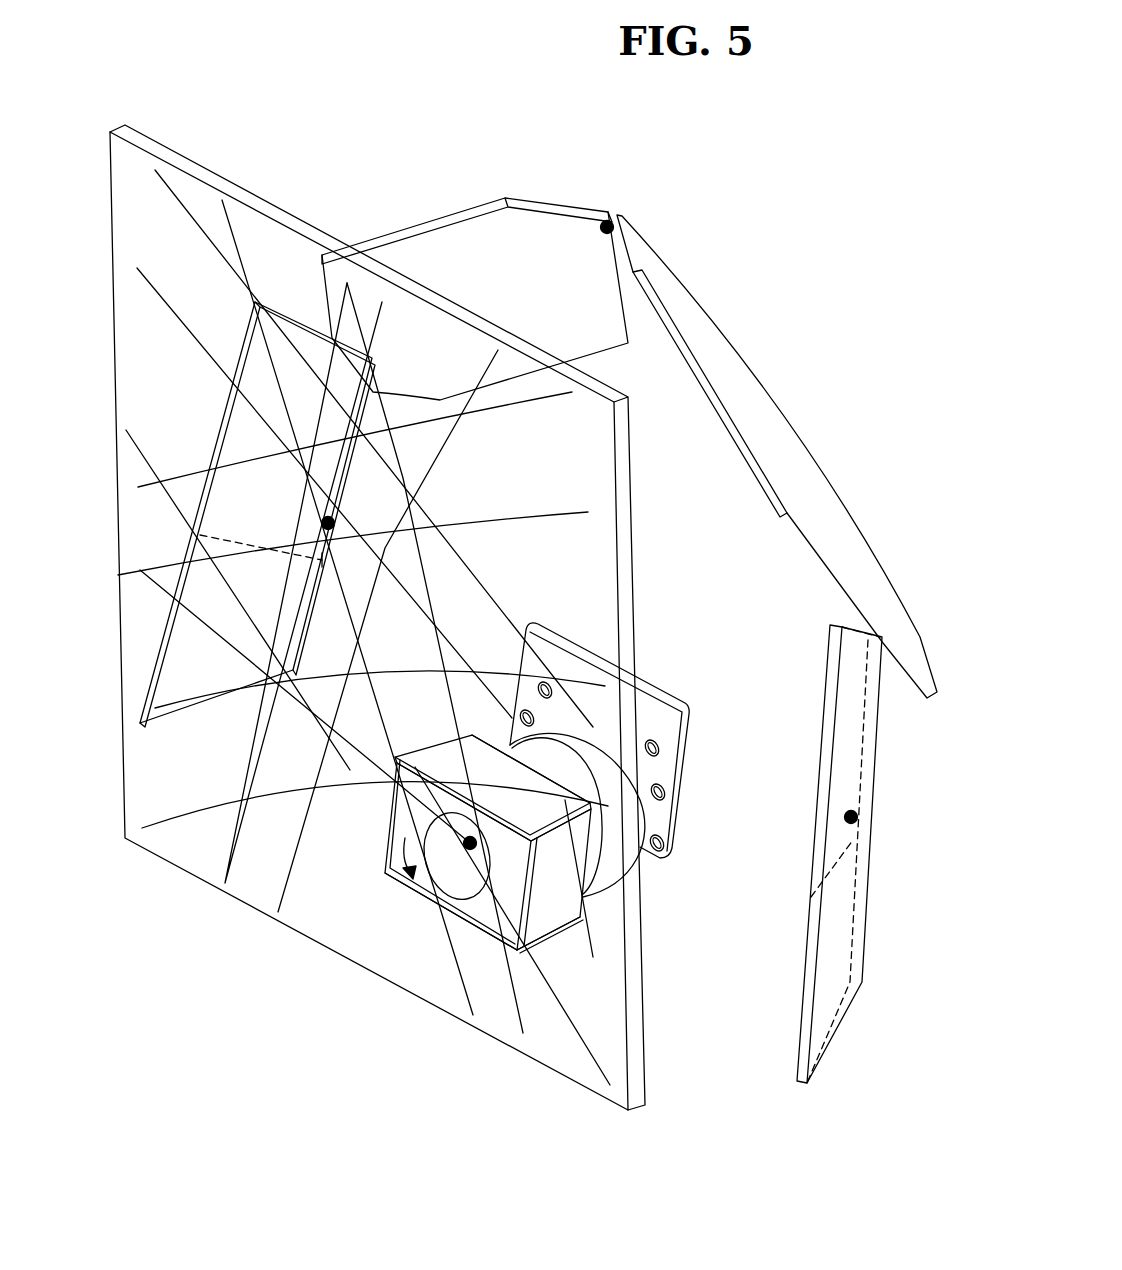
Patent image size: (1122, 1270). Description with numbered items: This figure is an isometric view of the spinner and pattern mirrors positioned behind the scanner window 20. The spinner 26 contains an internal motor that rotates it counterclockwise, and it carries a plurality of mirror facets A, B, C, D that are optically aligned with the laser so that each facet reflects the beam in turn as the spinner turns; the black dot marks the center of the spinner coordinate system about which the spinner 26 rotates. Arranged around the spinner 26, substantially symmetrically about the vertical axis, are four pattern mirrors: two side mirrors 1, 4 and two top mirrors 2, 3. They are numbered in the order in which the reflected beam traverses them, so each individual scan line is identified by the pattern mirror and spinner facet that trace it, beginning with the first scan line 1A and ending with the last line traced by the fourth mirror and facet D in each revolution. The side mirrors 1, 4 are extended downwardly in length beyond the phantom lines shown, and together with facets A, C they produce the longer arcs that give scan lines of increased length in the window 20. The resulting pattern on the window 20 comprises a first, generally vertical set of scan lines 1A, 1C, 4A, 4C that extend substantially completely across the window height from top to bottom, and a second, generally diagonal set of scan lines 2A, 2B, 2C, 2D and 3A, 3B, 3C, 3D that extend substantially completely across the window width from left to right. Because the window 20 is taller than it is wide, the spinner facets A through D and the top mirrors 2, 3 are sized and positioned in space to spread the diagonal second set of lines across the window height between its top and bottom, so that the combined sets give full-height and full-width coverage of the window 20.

The pattern mirror 1 is at (828, 665).
The scan line 1A is at (467, 1000).
The scan line 1C is at (517, 1022).
The pattern mirror 2 is at (740, 458).
The scan line 2A is at (177, 313).
The scan line 2B is at (585, 955).
The scan line 2C is at (172, 187).
The scan line 2D is at (592, 1053).
The pattern mirror 3 is at (605, 333).
The scan line 3A is at (150, 563).
The scan line 3B is at (158, 708).
The scan line 3C is at (155, 483).
The scan line 3D is at (142, 828).
The pattern mirror 4 is at (160, 622).
The scan line 4A is at (278, 912).
The scan line 4C is at (225, 883).
The window 20 is at (160, 148).
The spinner 26 is at (386, 874).
The mirror facet A is at (452, 750).
The mirror facet B is at (533, 923).
The mirror facet C is at (432, 903).
The mirror facet D is at (398, 838).